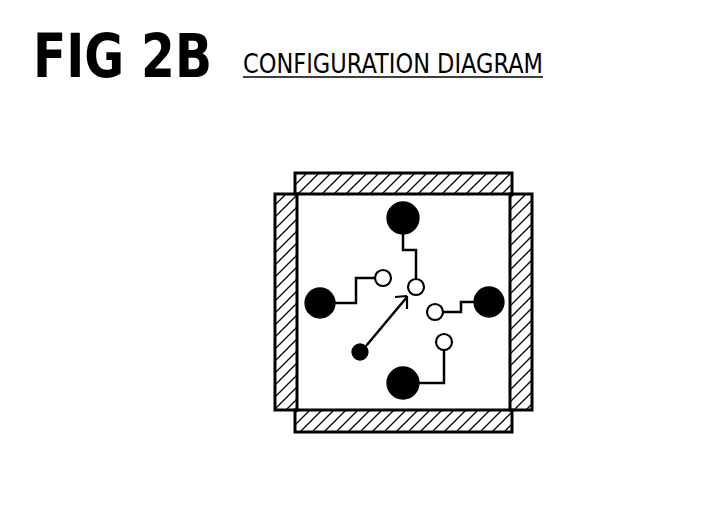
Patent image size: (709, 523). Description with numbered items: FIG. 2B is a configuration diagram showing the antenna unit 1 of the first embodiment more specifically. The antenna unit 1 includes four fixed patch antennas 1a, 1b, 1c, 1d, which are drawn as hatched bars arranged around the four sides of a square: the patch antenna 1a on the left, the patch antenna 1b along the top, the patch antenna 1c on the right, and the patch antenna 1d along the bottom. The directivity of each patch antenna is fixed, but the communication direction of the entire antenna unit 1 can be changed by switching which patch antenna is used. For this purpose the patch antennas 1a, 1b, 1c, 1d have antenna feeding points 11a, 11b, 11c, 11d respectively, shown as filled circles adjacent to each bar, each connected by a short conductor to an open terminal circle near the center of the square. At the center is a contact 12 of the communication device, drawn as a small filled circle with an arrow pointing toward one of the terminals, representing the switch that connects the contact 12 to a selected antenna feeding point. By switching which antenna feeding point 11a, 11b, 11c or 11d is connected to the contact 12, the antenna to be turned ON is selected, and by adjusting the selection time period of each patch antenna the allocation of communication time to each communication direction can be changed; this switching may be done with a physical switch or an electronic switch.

The antenna unit 1 is at (600, 179).
The patch antenna 1a is at (275, 230).
The patch antenna 1b is at (455, 173).
The patch antenna 1c is at (533, 245).
The patch antenna 1d is at (475, 432).
The antenna feeding point 11a is at (307, 303).
The antenna feeding point 11b is at (398, 205).
The antenna feeding point 11c is at (505, 300).
The antenna feeding point 11d is at (410, 397).
The contact 12 is at (355, 355).